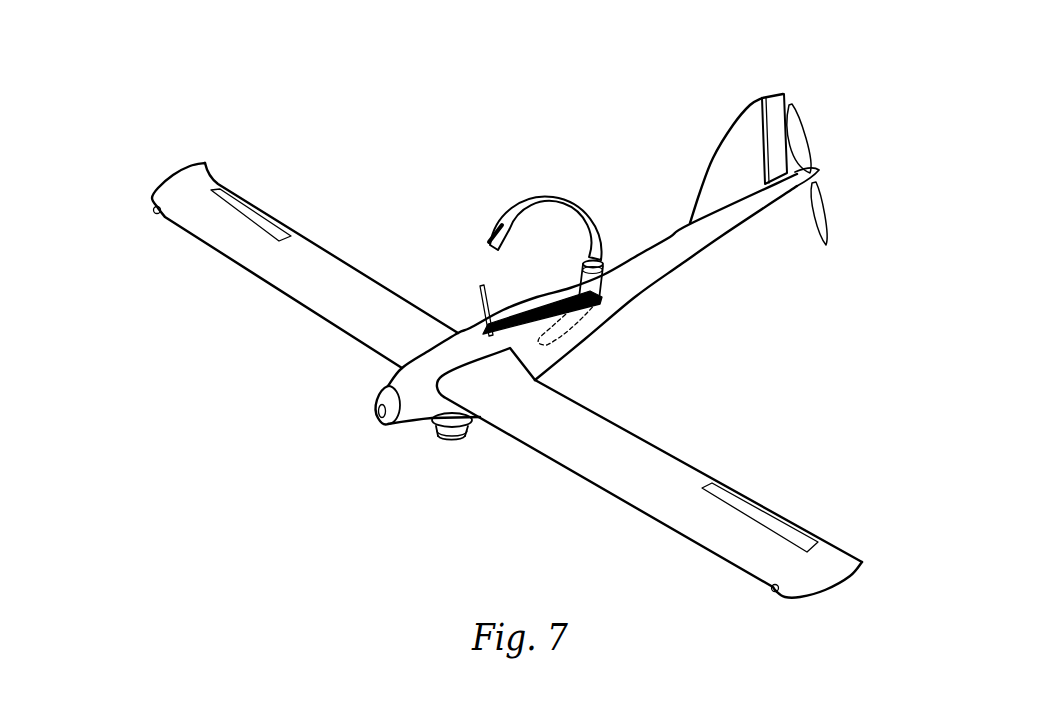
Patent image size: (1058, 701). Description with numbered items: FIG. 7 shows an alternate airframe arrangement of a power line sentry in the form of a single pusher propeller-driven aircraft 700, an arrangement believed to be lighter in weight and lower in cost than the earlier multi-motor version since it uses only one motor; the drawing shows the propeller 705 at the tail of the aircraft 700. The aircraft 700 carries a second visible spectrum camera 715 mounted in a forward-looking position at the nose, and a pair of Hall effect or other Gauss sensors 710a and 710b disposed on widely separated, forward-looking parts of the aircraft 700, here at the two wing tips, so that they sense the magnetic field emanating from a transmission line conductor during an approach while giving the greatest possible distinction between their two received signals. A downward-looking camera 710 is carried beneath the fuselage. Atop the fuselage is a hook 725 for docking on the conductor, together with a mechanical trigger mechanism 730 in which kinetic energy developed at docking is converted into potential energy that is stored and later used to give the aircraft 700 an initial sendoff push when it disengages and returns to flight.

The aircraft 700 is at (477, 316).
The propeller 705 is at (810, 147).
The camera 710 is at (447, 441).
The Gauss sensor 710a is at (152, 211).
The Gauss sensor 710b is at (772, 589).
The second visible spectrum camera 715 is at (376, 412).
The hook 725 is at (576, 327).
The mechanical trigger mechanism 730 is at (479, 289).